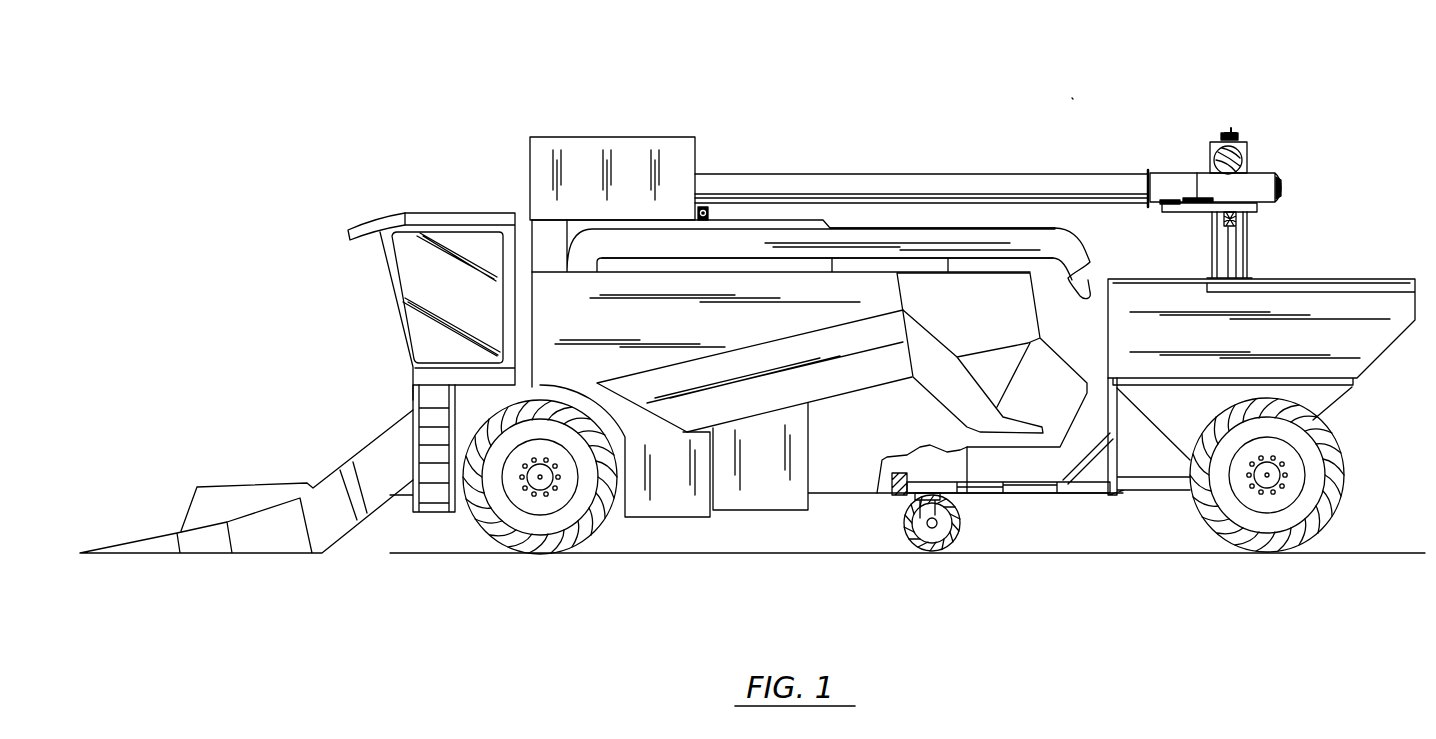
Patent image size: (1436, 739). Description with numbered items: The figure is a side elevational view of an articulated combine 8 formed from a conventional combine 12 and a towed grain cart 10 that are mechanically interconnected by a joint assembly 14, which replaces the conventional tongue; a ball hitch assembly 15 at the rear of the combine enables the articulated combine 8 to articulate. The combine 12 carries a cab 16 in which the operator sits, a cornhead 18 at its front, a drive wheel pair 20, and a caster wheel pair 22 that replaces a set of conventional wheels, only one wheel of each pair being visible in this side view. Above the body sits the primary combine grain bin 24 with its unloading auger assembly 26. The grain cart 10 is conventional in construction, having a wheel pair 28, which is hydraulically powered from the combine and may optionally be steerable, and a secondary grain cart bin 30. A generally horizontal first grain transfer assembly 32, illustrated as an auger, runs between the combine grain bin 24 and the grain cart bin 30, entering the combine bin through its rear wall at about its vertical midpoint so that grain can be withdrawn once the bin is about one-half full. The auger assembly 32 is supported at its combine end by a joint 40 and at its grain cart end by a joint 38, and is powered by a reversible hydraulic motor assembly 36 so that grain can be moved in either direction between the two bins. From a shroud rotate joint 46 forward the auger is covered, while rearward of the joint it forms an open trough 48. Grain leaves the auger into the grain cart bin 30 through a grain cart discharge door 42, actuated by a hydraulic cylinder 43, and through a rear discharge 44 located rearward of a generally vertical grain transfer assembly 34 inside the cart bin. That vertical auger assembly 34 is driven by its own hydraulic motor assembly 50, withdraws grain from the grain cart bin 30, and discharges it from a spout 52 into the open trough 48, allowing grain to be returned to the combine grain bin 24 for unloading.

The articulated combine 8 is at (1075, 95).
The grain cart 10 is at (1360, 242).
The combine 12 is at (456, 165).
The joint assembly 14 is at (978, 506).
The ball hitch assembly 15 is at (888, 505).
The cab 16 is at (403, 213).
The cornhead 18 is at (148, 553).
The drive wheel pair 20 is at (530, 550).
The caster wheel pair 22 is at (931, 556).
The combine grain bin 24 is at (621, 148).
The auger assembly 26 is at (922, 237).
The wheel pair 28 is at (1332, 478).
The grain cart bin 30 is at (1372, 340).
The first grain transfer assembly 32 is at (823, 183).
The vertical grain transfer assembly 34 is at (1250, 250).
The hydraulic motor assembly 36 is at (1280, 178).
The joint 38 is at (1222, 218).
The joint 40 is at (708, 210).
The grain cart discharge door 42 is at (1160, 205).
The hydraulic cylinder 43 is at (1196, 195).
The rear discharge 44 is at (1262, 202).
The shroud rotate joint 46 is at (1158, 172).
The open trough 48 is at (1202, 173).
The hydraulic motor assembly 50 is at (1232, 128).
The spout 52 is at (1248, 150).